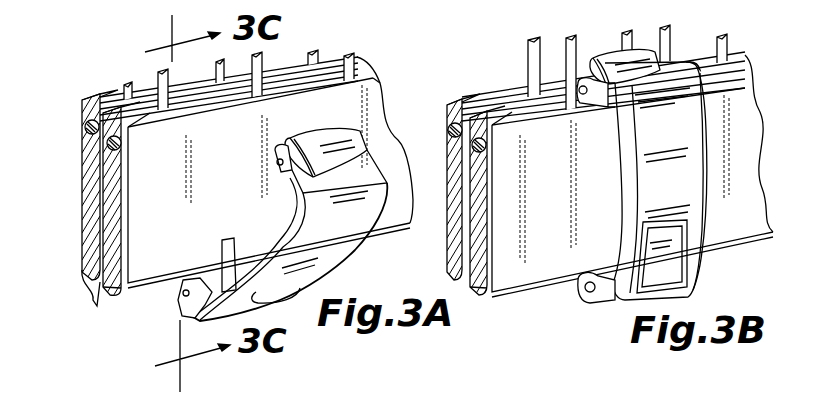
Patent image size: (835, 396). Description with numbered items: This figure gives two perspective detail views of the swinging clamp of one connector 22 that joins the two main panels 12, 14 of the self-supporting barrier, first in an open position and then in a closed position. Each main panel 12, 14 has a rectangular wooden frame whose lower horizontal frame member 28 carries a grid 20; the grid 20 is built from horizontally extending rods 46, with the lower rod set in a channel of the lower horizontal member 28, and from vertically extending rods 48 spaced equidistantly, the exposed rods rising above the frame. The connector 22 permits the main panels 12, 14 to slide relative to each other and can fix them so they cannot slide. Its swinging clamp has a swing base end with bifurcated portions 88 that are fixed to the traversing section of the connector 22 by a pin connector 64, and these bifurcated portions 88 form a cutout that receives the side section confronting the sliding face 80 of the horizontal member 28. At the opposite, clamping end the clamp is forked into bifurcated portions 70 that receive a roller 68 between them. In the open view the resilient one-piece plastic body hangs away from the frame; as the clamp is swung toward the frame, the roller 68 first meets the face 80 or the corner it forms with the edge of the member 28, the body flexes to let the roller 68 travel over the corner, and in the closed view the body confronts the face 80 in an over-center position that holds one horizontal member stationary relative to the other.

In FIG. 3A, the main panel 12 is at (120, 302).
In FIG. 3B, the main panel 12 is at (522, 295).
In FIG. 3A, the main panel 14 is at (80, 200).
In FIG. 3B, the main panel 14 is at (447, 128).
In FIG. 3B, the grid or mesh 20 is at (527, 62).
In FIG. 3A, the connector 22 is at (332, 255).
In FIG. 3B, the connector 22 is at (703, 262).
In FIG. 3A, the lower horizontal frame member 28 is at (95, 302).
In FIG. 3A, the horizontally extending rod 46 is at (86, 125).
In FIG. 3B, the horizontally extending rod 46 is at (467, 137).
In FIG. 3A, the vertically extending rod 48 is at (160, 84).
In FIG. 3A, the pin connector 64 is at (176, 302).
In FIG. 3A, the roller 68 is at (350, 125).
In FIG. 3B, the roller 68 is at (606, 60).
In FIG. 3A, the bifurcated portions 70 is at (381, 135).
In FIG. 3A, the face 80 is at (163, 238).
In FIG. 3B, the face 80 is at (632, 176).
In FIG. 3B, the bifurcated portions 88 is at (613, 303).